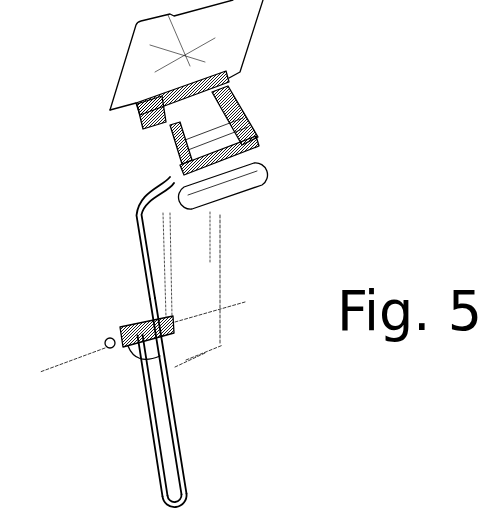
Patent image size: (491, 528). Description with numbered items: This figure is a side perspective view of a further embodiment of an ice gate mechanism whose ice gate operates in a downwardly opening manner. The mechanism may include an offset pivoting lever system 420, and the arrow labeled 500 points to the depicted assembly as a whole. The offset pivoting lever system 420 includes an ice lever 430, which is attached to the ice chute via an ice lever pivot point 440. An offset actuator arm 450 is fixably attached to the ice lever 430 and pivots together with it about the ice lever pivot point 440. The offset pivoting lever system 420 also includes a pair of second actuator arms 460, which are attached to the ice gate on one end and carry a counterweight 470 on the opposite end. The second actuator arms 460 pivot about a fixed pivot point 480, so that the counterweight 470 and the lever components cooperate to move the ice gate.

The mounting assembly 500 is at (430, 501).
The second actuator arms 460 is at (228, 88).
The fixed pivot point 480 is at (252, 136).
The counterweight 470 is at (228, 200).
The offset actuator arm 450 is at (136, 232).
The ice lever pivot point 440 is at (106, 338).
The offset pivoting lever system 420 is at (150, 423).
The ice lever 430 is at (160, 467).